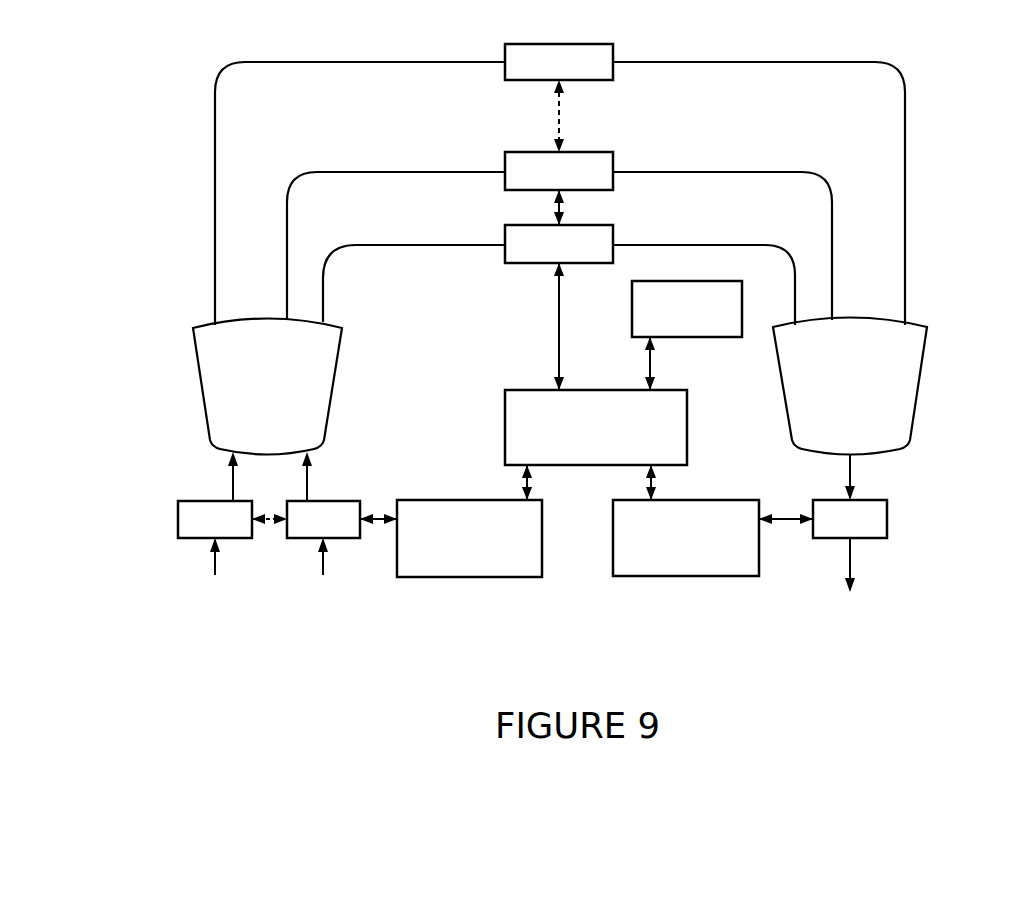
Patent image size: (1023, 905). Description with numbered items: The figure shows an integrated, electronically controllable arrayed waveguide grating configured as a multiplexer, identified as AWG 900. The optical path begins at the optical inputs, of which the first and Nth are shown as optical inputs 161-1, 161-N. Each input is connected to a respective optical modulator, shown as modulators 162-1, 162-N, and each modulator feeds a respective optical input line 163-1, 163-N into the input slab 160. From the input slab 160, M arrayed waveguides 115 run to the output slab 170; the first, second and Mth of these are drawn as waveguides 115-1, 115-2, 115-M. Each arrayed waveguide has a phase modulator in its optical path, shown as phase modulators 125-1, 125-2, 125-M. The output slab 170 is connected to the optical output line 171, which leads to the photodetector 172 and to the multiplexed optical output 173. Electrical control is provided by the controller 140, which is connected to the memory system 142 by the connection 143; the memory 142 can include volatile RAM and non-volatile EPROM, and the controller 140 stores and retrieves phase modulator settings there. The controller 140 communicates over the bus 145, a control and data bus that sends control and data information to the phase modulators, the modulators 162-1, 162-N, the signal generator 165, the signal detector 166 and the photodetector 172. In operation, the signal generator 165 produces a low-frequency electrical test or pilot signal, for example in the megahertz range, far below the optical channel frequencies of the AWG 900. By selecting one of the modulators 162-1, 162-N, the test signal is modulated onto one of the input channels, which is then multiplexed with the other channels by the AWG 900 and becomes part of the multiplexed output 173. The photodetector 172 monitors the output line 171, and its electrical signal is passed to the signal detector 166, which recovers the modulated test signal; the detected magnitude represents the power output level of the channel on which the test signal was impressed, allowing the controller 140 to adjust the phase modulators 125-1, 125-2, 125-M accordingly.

The arrayed waveguide grating 900 is at (224, 661).
The arrayed waveguides 115 is at (374, 325).
The first arrayed waveguide 115-1 is at (385, 245).
The second arrayed waveguide 115-2 is at (351, 170).
The Mth arrayed waveguide 115-M is at (297, 62).
The first phase modulator 125-1 is at (613, 227).
The second phase modulator 125-2 is at (613, 152).
The Mth phase modulator 125-M is at (613, 80).
The controller 140 is at (505, 390).
The memory system 142 is at (708, 338).
The connection 143 is at (646, 362).
The bus 145 is at (548, 337).
The input slab 160 is at (267, 387).
The first optical input 161-1 is at (323, 558).
The Nth optical input 161-N is at (215, 558).
The first optical modulator 162-1 is at (357, 500).
The Nth optical modulator 162-N is at (178, 518).
The first optical input to input slab 163-1 is at (308, 478).
The Nth optical input to input slab 163-N is at (230, 482).
The signal generator 165 is at (505, 577).
The signal detector 166 is at (668, 577).
The output slab 170 is at (850, 386).
The optical output line 171 is at (847, 483).
The photodetector 172 is at (887, 538).
The optical output 173 is at (855, 565).